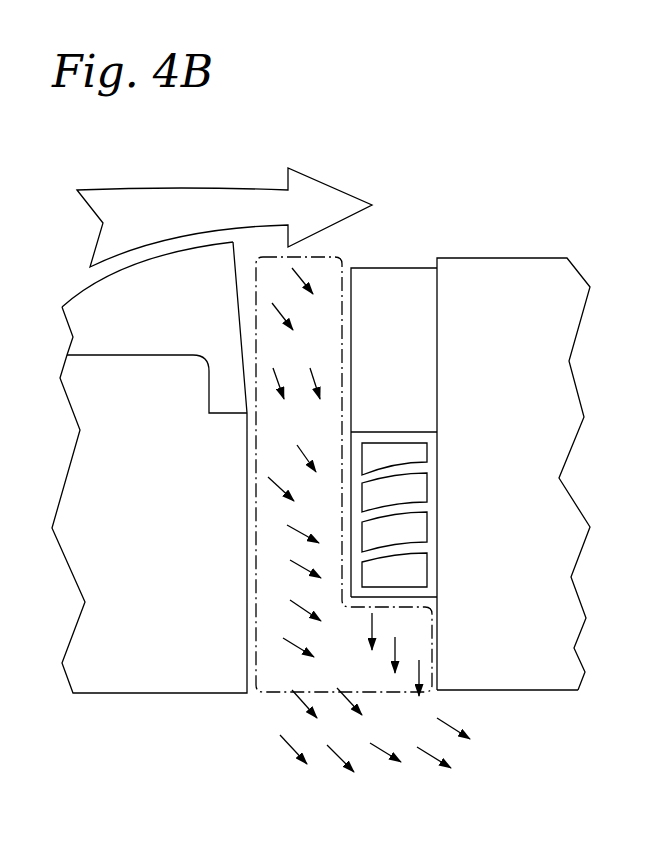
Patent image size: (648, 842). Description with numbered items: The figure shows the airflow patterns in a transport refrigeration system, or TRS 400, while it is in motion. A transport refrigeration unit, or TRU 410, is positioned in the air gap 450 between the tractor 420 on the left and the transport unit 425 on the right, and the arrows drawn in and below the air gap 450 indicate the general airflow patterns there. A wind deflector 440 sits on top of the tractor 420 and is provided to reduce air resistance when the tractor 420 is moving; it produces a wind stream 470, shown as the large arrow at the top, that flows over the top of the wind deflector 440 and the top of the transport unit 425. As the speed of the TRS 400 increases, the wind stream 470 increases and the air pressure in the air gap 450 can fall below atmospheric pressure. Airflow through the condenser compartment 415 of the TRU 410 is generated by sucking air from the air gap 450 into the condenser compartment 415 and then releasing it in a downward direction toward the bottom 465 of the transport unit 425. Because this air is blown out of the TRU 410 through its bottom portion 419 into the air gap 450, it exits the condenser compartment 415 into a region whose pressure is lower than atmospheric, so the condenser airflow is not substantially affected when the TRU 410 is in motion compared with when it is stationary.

The TRS 400 is at (500, 181).
The TRU 410 is at (375, 268).
The condenser compartment 415 is at (412, 485).
The bottom portion 419 is at (407, 598).
The tractor 420 is at (157, 673).
The transport unit 425 is at (492, 258).
The wind deflector 440 is at (83, 283).
The air gap 450 is at (278, 693).
The bottom 465 is at (516, 690).
The wind stream 470 is at (233, 189).